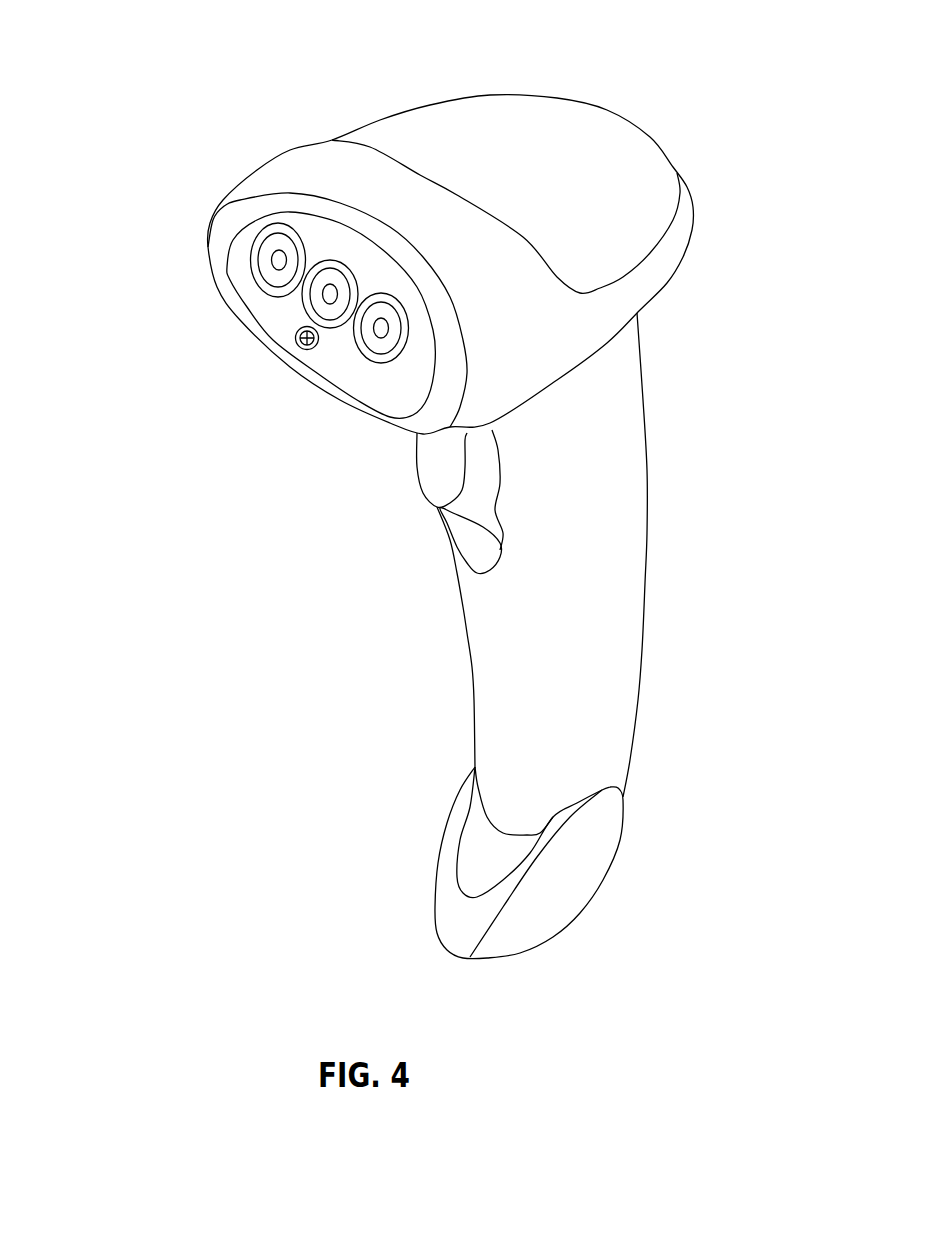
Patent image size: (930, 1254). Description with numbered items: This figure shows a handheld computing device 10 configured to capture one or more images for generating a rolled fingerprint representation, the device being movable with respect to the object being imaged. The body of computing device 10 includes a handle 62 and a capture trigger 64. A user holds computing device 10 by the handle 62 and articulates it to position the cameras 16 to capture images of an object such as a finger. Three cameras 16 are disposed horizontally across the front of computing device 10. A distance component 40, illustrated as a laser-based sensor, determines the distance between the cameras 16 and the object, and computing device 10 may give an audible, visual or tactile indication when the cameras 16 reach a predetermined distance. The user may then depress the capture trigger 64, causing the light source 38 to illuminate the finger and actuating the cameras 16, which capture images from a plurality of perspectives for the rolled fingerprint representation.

The computing device 10 is at (548, 57).
The cameras 16 is at (378, 283).
The light source 38 is at (323, 380).
The distance component 40 is at (288, 327).
The handle 62 is at (452, 655).
The capture trigger 64 is at (417, 500).